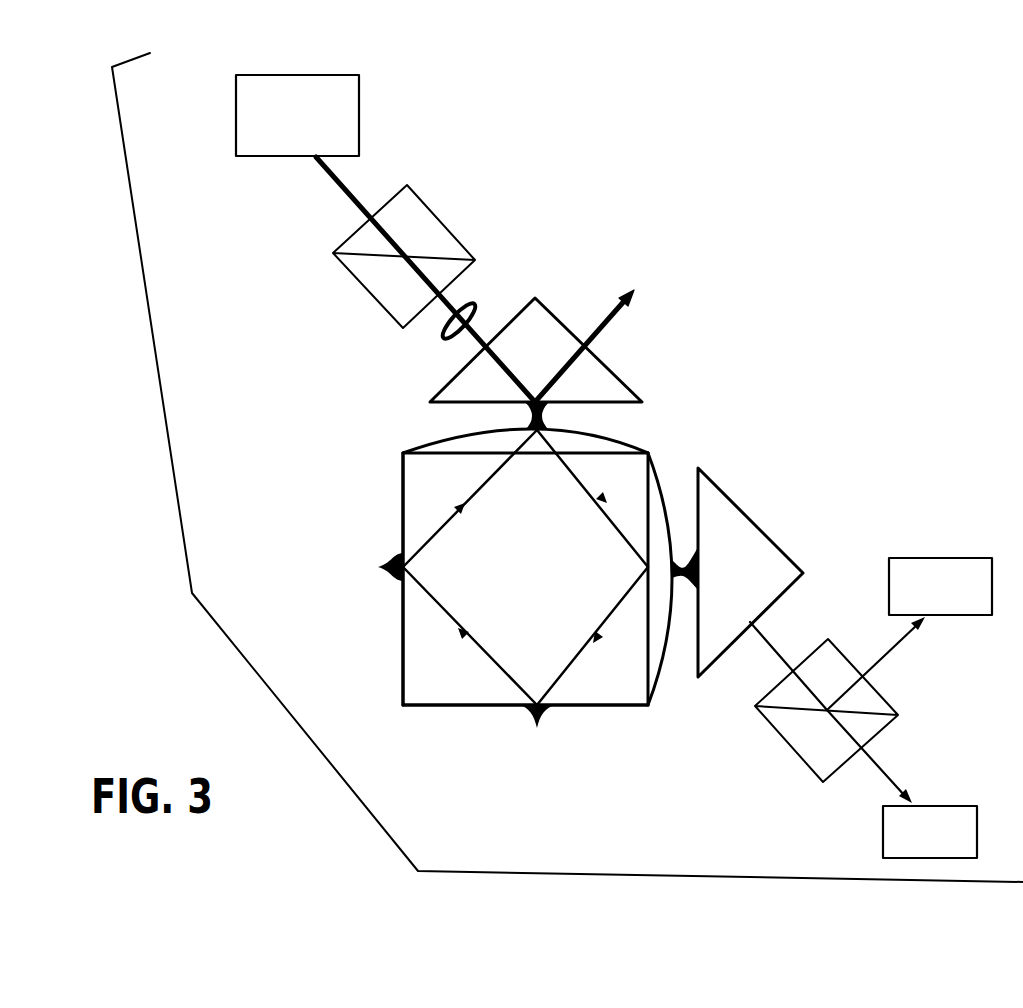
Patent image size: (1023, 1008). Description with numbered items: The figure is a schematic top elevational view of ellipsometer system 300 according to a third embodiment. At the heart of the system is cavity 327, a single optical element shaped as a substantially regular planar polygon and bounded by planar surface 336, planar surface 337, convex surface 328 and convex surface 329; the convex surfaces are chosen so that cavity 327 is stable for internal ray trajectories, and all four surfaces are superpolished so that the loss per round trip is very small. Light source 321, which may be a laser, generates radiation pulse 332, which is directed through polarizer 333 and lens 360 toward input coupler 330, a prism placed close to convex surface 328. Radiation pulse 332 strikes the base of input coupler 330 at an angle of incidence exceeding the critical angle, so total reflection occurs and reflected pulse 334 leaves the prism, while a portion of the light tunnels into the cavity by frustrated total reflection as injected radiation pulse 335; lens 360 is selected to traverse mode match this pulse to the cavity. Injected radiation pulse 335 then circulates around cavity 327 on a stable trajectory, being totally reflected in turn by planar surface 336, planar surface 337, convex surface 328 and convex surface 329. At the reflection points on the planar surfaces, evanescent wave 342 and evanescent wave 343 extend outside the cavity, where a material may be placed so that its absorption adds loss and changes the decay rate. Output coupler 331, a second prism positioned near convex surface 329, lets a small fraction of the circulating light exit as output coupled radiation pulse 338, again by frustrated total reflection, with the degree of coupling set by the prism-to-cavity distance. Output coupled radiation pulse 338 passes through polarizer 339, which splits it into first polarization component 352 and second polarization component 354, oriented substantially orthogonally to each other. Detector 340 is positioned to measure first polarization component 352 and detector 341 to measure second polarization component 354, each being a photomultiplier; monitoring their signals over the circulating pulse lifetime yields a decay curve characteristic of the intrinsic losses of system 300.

The ellipsometer system 300 is at (192, 593).
The light source 321 is at (371, 112).
The radiation pulse 332 is at (338, 202).
The polarizer 333 is at (370, 315).
The lens 360 is at (485, 293).
The input coupler 330 is at (617, 357).
The reflected pulse 334 is at (641, 282).
The convex surface 328 is at (413, 437).
The cavity 327 is at (645, 434).
The planar surface 337 is at (389, 496).
The planar surface 336 is at (584, 719).
The injected radiation pulse 335 is at (627, 498).
The evanescent wave 343 is at (389, 586).
The evanescent wave 342 is at (526, 732).
The convex surface 329 is at (667, 700).
The output coupler 331 is at (736, 488).
The output coupled radiation pulse 338 is at (763, 659).
The polarizer 339 is at (791, 760).
The first polarization component 352 is at (876, 781).
The second polarization component 354 is at (883, 641).
The detector 340 is at (976, 626).
The detector 341 is at (943, 795).